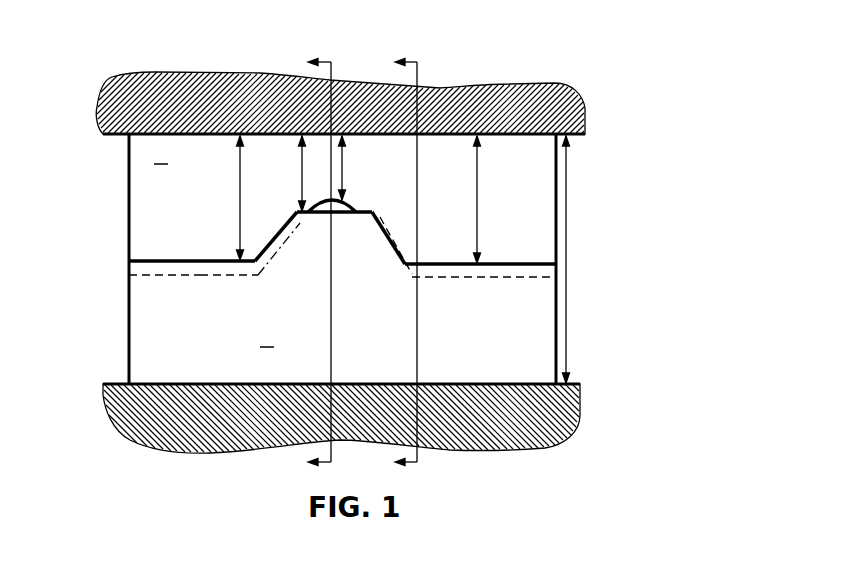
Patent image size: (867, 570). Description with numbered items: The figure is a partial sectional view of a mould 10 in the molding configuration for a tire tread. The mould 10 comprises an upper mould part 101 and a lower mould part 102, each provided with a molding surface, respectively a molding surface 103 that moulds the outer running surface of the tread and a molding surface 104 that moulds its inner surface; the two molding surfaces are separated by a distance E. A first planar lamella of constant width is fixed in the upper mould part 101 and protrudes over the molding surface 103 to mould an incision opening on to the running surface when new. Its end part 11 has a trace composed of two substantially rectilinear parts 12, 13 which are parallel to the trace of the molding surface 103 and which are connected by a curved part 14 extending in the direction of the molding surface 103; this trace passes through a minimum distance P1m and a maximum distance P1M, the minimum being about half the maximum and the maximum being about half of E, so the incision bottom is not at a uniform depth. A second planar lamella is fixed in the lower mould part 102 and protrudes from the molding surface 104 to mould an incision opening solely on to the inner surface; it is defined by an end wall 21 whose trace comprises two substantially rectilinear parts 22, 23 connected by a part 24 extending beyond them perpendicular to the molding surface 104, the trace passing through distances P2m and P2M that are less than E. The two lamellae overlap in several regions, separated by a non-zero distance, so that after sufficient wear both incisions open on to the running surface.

The mould 10 is at (358, 258).
The upper mould part 101 is at (509, 112).
The lower mould part 102 is at (547, 402).
The molding surface of the upper part 103 is at (574, 137).
The molding surface of the lower part 104 is at (572, 387).
The end part of the first lamella 11 is at (150, 274).
The rectilinear part of the end part 12 is at (207, 276).
The rectilinear part of the end part 13 is at (515, 278).
The curved part 14 is at (378, 229).
The end wall of the second lamella 21 is at (200, 260).
The rectilinear part of the end wall 22 is at (222, 259).
The rectilinear part of the end wall 23 is at (505, 263).
The projecting part of the end wall 24 is at (318, 214).